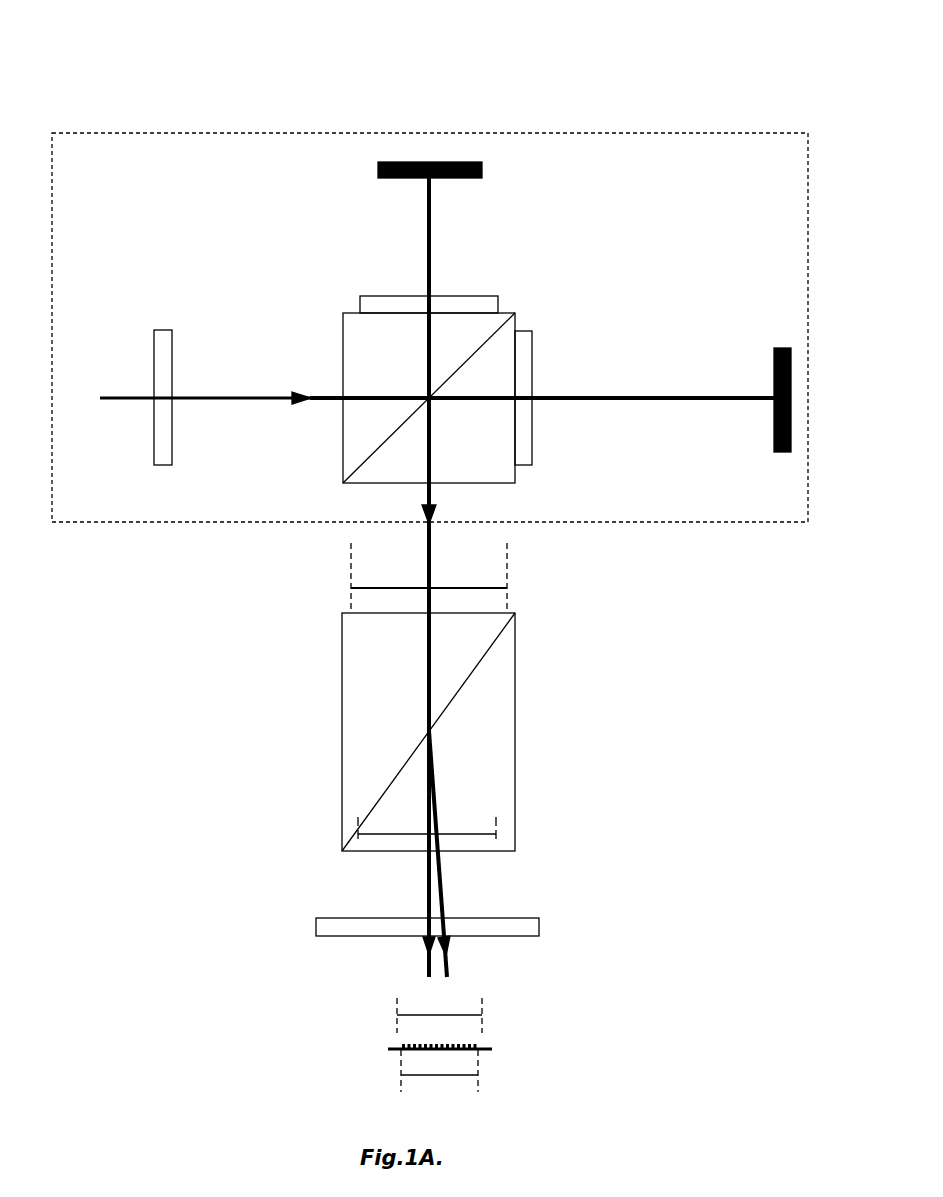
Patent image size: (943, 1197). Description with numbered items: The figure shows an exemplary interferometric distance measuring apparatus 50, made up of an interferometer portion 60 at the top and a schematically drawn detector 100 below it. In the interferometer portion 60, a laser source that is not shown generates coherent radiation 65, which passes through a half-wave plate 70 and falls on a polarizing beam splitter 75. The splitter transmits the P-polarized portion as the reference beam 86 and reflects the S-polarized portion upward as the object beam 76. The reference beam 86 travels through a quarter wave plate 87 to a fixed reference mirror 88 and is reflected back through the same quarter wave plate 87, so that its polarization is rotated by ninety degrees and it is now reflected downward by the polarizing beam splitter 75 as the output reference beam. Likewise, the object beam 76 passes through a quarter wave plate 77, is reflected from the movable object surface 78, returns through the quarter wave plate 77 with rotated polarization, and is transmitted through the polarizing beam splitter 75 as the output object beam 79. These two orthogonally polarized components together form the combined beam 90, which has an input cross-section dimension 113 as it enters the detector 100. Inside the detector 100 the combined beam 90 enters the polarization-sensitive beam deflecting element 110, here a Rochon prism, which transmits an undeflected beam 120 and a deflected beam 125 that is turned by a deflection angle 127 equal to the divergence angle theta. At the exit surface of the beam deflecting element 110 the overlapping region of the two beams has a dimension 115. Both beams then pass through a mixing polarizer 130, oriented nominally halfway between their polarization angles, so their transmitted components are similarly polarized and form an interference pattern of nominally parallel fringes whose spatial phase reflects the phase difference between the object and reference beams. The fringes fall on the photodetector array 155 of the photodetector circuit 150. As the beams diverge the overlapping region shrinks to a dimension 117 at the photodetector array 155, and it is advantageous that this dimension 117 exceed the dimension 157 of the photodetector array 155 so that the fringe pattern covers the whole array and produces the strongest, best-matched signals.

The interferometric distance measuring apparatus 50 is at (135, 114).
The interferometer portion 60 is at (238, 133).
The radiation 65 is at (150, 398).
The half-wave plate 70 is at (172, 345).
The polarizing beam splitter 75 is at (515, 313).
The object beam 76 is at (429, 262).
The quarter wave plate 77 is at (498, 305).
The movable object surface 78 is at (482, 172).
The output object beam 79 is at (434, 493).
The reference beam 86 is at (613, 398).
The quarter wave plate 87 is at (532, 461).
The fixed reference mirror 88 is at (774, 430).
The combined beam 90 is at (433, 545).
The detector 100 is at (148, 657).
The polarization-sensitive beam deflecting element 110 is at (342, 684).
The input cross-section dimension 113 is at (355, 588).
The dimension of the interference fringe pattern at the exit surface 115 is at (362, 834).
The dimension of the overlapping region at the photodetector array 117 is at (427, 1015).
The undeflected beam 120 is at (427, 888).
The deflected beam 125 is at (440, 875).
The deflection angle 127 is at (437, 905).
The mixing polarizer 130 is at (316, 936).
The photodetector circuit 150 is at (492, 1049).
The photodetector array 155 is at (482, 1046).
The dimension of the photodetector array 157 is at (455, 1075).